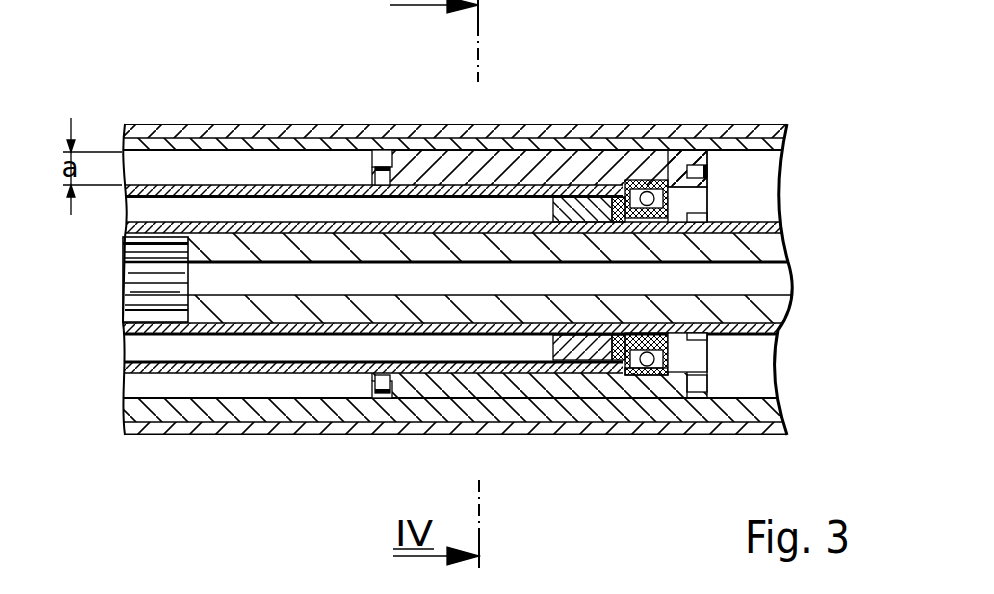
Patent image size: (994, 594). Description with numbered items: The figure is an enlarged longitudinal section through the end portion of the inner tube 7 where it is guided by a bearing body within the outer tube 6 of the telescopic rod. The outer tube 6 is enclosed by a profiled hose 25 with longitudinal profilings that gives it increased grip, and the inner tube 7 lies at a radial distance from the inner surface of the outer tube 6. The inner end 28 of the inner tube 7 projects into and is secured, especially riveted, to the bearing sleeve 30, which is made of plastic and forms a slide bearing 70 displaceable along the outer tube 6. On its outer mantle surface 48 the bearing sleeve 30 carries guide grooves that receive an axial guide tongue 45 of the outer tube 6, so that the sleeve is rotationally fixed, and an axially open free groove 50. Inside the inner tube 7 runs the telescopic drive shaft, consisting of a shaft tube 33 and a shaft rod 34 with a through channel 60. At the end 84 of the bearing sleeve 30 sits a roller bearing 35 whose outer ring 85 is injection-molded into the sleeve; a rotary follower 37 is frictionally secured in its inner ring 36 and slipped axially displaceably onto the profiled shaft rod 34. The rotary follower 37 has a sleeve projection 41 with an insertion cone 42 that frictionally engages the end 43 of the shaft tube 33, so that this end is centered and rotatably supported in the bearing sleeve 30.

The profiled hose 25 is at (147, 136).
The outer tube 6 is at (222, 143).
The inner tube 7 is at (283, 192).
The outer mantle surface 48 is at (418, 123).
The shaft rod 34 is at (435, 123).
The bearing sleeve 30 is at (500, 123).
The inner end 28 is at (552, 183).
The end 43 is at (652, 178).
The slide bearing 70 is at (656, 158).
The end 84 is at (726, 173).
The free groove 50 is at (700, 205).
The through channel 60 is at (770, 280).
The rotary follower 37 is at (710, 345).
The inner ring 36 is at (672, 360).
The roller bearing 35 is at (657, 376).
The shaft tube 33 is at (148, 330).
The guide tongue 45 is at (150, 402).
The insertion cone 42 is at (553, 348).
The sleeve projection 41 is at (586, 352).
The outer ring 85 is at (657, 378).